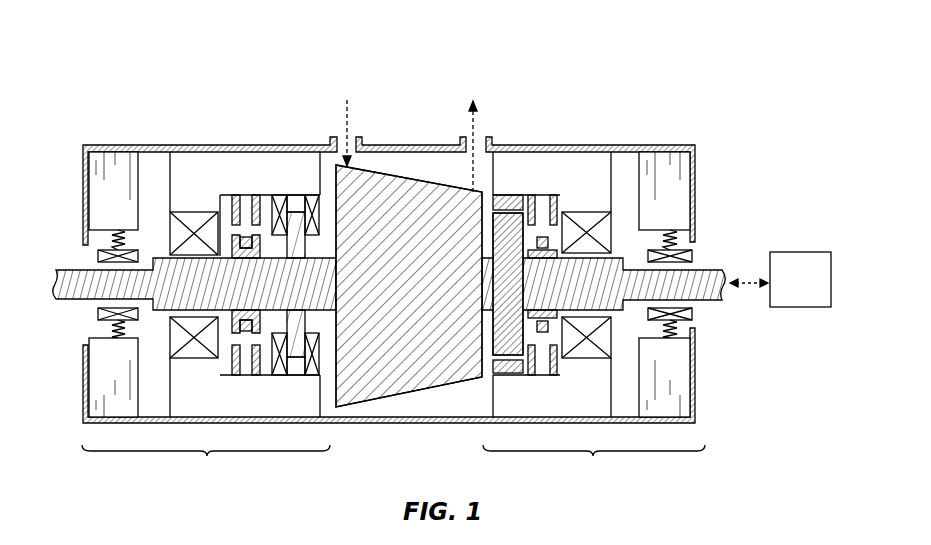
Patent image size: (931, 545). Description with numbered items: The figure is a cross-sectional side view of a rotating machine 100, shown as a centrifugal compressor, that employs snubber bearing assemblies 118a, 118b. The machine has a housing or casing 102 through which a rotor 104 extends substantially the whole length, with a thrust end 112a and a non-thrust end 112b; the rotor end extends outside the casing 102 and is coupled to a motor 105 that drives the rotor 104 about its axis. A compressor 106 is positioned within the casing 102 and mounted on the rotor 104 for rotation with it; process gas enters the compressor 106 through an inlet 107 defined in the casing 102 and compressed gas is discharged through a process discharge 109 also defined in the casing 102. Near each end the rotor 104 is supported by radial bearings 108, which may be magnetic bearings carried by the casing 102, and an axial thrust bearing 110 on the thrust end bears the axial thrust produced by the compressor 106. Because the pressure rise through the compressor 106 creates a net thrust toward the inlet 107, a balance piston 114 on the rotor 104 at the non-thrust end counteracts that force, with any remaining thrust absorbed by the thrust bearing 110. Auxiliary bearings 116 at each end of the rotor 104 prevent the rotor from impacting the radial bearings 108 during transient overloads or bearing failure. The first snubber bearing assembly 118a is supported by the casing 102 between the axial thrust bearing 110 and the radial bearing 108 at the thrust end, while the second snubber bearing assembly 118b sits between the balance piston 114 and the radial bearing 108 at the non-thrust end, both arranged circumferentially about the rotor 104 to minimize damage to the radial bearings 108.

The rotating machine 100 is at (117, 38).
The casing 102 is at (617, 146).
The rotor 104 is at (244, 295).
The motor 105 is at (816, 292).
The compressor 106 is at (429, 272).
The inlet 107 is at (357, 143).
The radial bearings 108 is at (200, 214).
The process discharge 109 is at (487, 143).
The axial thrust bearing 110 is at (310, 197).
The thrust end 112a is at (206, 465).
The non-thrust end 112b is at (594, 465).
The balance piston 114 is at (505, 223).
The auxiliary bearings 116 is at (98, 255).
The first snubber bearing assembly 118a is at (245, 219).
The second snubber bearing assembly 118b is at (541, 224).